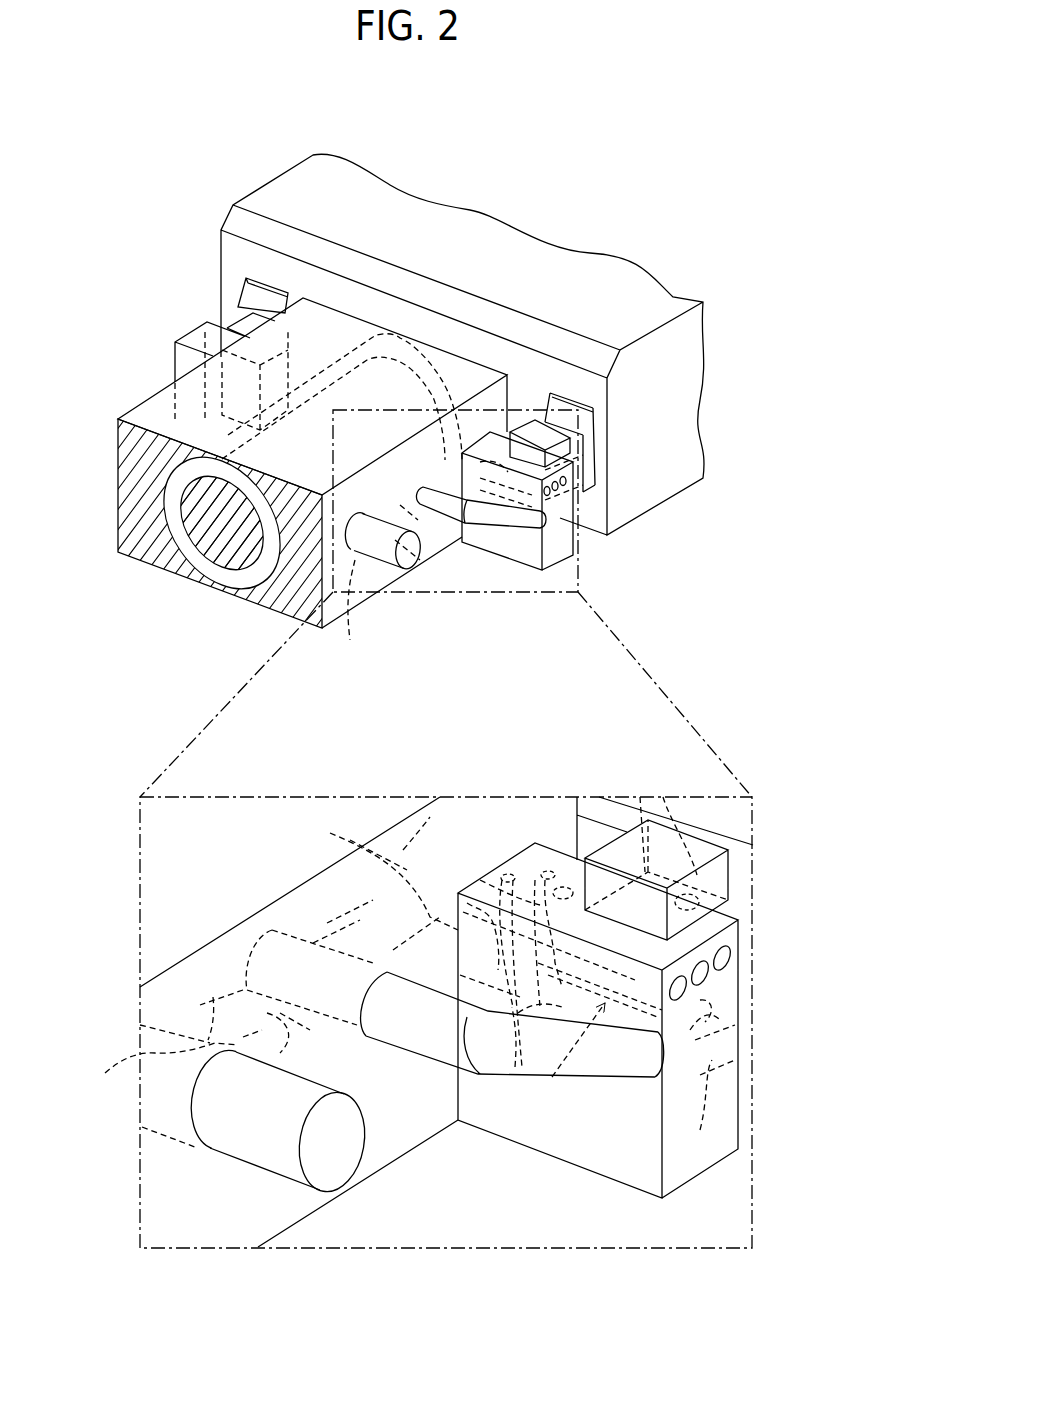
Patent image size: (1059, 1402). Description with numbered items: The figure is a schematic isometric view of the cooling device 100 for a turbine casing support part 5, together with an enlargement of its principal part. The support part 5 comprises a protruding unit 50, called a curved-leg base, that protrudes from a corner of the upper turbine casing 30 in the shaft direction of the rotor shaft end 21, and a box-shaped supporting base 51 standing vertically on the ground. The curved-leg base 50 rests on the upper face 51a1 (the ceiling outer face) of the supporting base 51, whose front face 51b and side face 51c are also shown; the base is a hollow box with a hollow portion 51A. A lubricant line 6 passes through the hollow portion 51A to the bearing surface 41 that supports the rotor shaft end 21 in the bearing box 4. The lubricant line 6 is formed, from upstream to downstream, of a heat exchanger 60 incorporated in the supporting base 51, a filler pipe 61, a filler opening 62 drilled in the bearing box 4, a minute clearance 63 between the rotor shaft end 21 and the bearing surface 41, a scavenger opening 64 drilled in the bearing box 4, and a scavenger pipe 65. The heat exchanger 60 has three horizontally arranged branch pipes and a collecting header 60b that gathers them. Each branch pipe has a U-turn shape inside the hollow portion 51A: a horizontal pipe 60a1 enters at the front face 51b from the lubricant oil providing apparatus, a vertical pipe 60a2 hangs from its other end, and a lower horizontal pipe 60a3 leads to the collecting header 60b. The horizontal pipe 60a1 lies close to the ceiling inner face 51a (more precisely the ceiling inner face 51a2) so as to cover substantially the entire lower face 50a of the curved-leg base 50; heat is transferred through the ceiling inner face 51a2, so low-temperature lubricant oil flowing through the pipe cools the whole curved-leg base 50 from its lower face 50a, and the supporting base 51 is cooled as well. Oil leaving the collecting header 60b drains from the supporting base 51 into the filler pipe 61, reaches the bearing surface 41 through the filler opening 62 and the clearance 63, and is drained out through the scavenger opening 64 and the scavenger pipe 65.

The upper turbine casing 30 is at (462, 216).
The bearing box 4 is at (140, 411).
The bearing surface 41 is at (178, 498).
The rotor shaft end 21 is at (200, 545).
The turbine casing support part 5 is at (108, 248).
The protruding unit (curved-leg base) 50 is at (240, 312).
The supporting base 51 is at (193, 332).
The cooling device 100 is at (615, 422).
The lubricant line 6 is at (588, 668).
The heat exchanger 60 is at (562, 572).
The filler pipe 61 is at (508, 518).
The filler opening 62 is at (472, 585).
The clearance 63 is at (420, 585).
The scavenger opening 64 is at (172, 1172).
The scavenger pipe 65 is at (385, 565).
The upper face of the supporting base (ceiling outer face) 51a1 is at (485, 880).
The ceiling inner face 51a2 is at (350, 840).
The ceiling inner face 51a is at (723, 917).
The hollow portion 51A is at (715, 1093).
The front face of the supporting base 51b is at (718, 1112).
The side face of the supporting base 51c is at (625, 1172).
The lower face of the protruding unit 50a is at (687, 813).
The horizontal pipe 60a1 is at (548, 871).
The vertical pipe 60a2 is at (508, 874).
The horizontal pipe 60a3 is at (540, 1115).
The collecting header 60b is at (745, 1046).